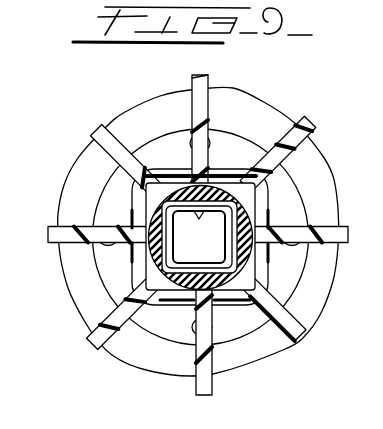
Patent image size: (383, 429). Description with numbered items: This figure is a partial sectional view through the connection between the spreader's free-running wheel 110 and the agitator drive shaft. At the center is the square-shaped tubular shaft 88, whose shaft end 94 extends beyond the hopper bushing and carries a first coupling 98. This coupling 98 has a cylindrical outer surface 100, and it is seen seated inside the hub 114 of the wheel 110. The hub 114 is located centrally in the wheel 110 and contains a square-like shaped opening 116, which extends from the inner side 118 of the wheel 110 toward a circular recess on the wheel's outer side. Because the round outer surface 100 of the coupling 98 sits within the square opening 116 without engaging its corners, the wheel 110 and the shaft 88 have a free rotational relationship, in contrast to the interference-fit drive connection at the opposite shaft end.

The tubular shaft 88 is at (233, 173).
The shaft end 94 is at (160, 287).
The first coupling 98 is at (185, 297).
The cylindrical outer surface 100 is at (248, 209).
The wheel 110 is at (260, 347).
The hub 114 is at (163, 177).
The square-like shaped opening 116 is at (140, 200).
The inner side 118 is at (290, 142).